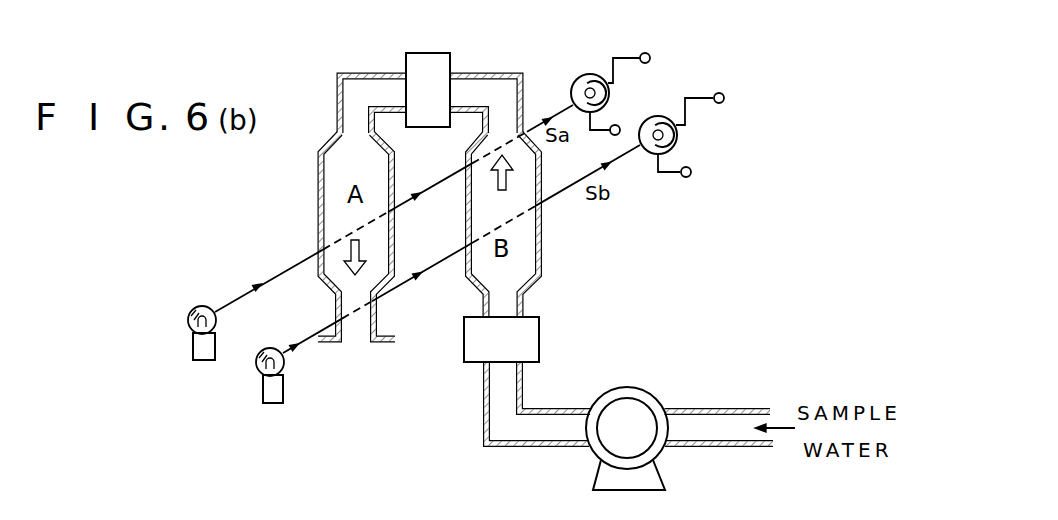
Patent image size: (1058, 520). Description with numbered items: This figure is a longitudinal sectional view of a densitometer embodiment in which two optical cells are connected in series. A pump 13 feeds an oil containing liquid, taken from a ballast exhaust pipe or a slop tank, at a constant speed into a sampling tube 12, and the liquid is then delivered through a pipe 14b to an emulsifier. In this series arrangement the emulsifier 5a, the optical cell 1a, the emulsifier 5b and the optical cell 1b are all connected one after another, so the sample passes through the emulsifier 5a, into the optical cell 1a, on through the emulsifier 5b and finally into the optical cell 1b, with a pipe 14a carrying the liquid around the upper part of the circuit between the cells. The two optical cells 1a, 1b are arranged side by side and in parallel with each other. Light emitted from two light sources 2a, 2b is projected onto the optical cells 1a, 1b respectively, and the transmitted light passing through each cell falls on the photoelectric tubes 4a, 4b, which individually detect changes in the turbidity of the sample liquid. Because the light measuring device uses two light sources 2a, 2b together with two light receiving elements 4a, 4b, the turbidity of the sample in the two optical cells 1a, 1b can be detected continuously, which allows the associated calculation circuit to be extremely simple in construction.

The optical cell 1a is at (318, 195).
The optical cell 1b is at (542, 250).
The light source 2a is at (193, 347).
The light source 2b is at (263, 387).
The photoelectric tube 4a is at (592, 74).
The photoelectric tube 4b is at (678, 140).
The emulsifier 5a is at (427, 53).
The emulsifier 5b is at (539, 352).
The sampling tube 12 is at (717, 408).
The pump 13 is at (643, 389).
The pipe 14a is at (481, 72).
The pipe 14b is at (483, 409).